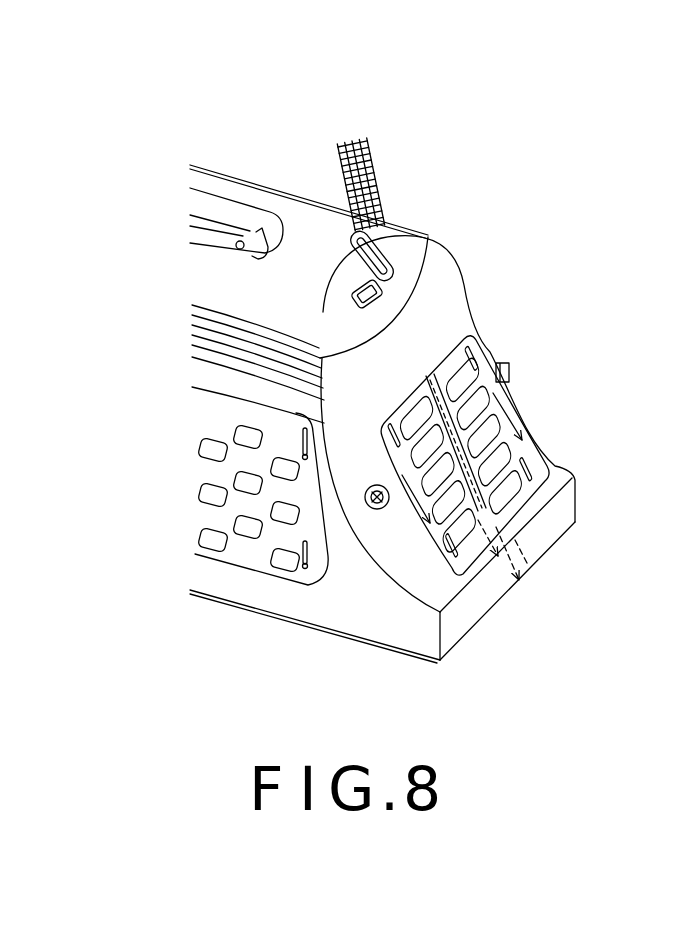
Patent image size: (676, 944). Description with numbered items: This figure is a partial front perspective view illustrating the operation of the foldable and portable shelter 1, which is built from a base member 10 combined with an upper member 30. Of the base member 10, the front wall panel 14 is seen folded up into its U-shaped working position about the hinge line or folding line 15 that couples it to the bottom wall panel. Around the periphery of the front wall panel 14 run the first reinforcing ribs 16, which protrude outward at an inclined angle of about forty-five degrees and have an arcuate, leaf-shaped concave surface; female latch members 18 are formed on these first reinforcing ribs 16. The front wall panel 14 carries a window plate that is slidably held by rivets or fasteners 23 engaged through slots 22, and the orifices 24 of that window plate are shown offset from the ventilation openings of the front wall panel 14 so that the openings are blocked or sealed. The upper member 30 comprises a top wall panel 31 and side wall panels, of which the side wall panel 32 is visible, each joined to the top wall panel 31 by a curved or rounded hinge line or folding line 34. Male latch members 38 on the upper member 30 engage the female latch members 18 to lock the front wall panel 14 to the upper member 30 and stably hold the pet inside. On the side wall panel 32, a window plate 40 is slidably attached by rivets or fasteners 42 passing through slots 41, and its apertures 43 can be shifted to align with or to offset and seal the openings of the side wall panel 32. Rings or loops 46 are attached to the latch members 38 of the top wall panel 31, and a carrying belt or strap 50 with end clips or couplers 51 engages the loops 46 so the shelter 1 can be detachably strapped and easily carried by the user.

The foldable and portable shelter 1 is at (523, 157).
The base member 10 is at (464, 641).
The front wall panel 14 is at (463, 297).
The hinge line or folding line 15 is at (441, 662).
The first reinforcing ribs 16 is at (412, 569).
The latch members 18 is at (520, 588).
The slots 22 is at (478, 366).
The rivets or fasteners 23 is at (478, 341).
The orifices 24 is at (514, 492).
The upper member 30 is at (215, 168).
The top wall panel 31 is at (271, 200).
The side wall panel 32 is at (281, 608).
The curved or rounded portion or hinge line or folding line 34 is at (431, 233).
The latch members 38 is at (510, 372).
The window plate 40 is at (252, 558).
The slots 41 is at (296, 413).
The rivets or fasteners 42 is at (306, 570).
The apertures 43 is at (240, 523).
The rings or loops 46 is at (391, 273).
The carrying belt or strap 50 is at (372, 150).
The end clips or locks or fasteners or couplers 51 is at (386, 240).